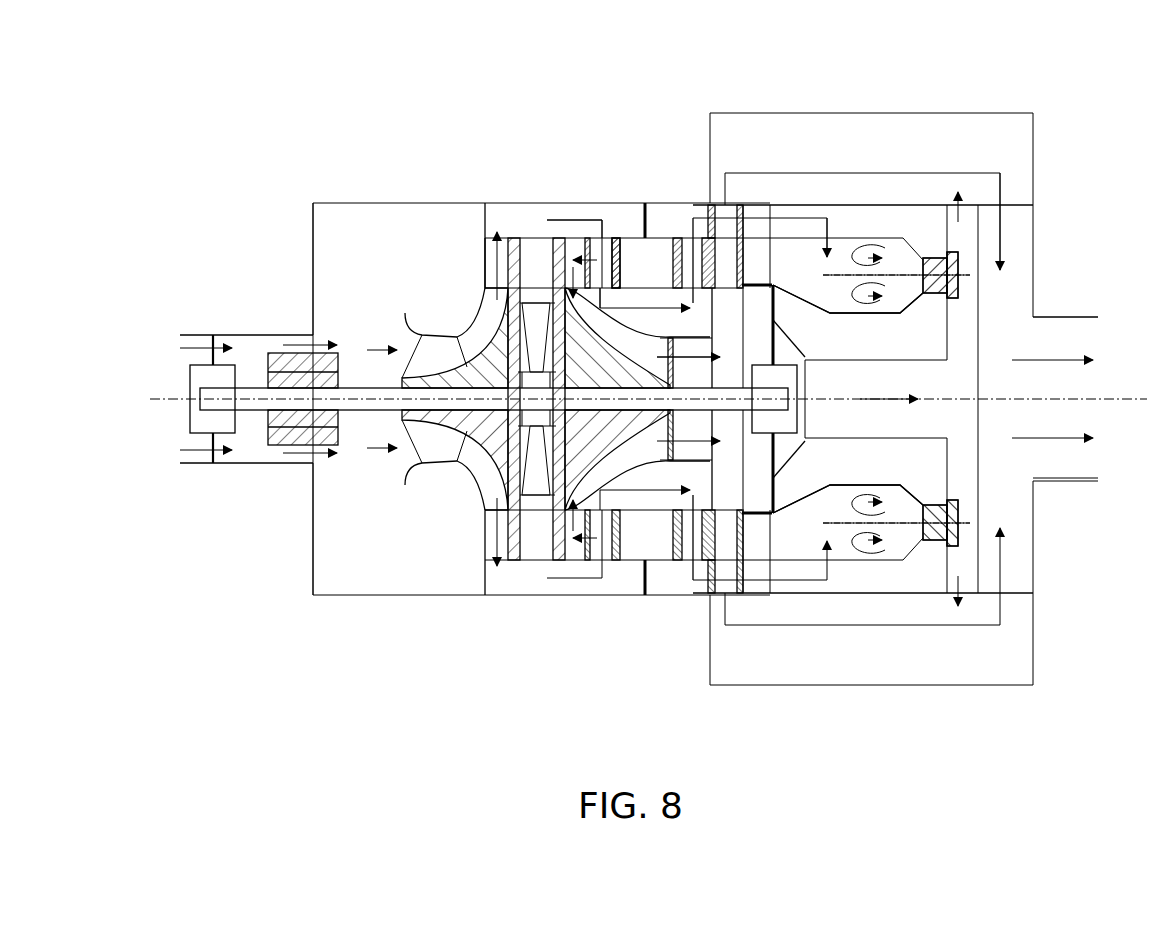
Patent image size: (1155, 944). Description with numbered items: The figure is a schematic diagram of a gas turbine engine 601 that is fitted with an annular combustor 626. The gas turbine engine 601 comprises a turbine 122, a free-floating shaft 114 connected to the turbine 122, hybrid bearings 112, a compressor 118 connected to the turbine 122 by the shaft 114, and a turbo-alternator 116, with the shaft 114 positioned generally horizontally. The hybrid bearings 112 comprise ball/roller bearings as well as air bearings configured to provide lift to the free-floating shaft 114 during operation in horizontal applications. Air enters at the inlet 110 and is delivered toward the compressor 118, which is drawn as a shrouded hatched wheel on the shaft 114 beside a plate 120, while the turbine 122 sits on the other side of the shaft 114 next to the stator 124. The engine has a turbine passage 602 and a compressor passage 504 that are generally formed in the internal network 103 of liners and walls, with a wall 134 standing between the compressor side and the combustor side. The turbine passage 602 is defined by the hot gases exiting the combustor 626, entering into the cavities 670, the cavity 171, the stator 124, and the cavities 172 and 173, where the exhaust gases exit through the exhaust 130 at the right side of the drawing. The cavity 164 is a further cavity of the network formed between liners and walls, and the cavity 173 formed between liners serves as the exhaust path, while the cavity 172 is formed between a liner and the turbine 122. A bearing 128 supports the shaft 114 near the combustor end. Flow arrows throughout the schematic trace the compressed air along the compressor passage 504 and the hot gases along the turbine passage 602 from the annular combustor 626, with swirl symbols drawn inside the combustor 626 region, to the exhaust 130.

The gas turbine engine 601 is at (273, 120).
The internal network 103 is at (582, 153).
The inlet 110 is at (185, 340).
The hybrid bearings 112 is at (190, 412).
The free-floating shaft 114 is at (265, 355).
The turbo-alternator 116 is at (275, 450).
The compressor 118 is at (435, 455).
The diaphragm 120 is at (518, 560).
The turbine 122 is at (627, 450).
The stator 124 is at (572, 577).
The bearing 128 is at (957, 253).
The exhaust 130 is at (1102, 453).
The partition wall 134 is at (720, 210).
The cavity 164 is at (849, 233).
The cavity 171 is at (632, 285).
The cavity 172 is at (670, 357).
The cavity 173 is at (1001, 204).
The compressor passage 504 is at (565, 223).
The turbine passage 602 is at (628, 257).
The annular combustor 626 is at (905, 240).
The cavities 670 is at (874, 400).